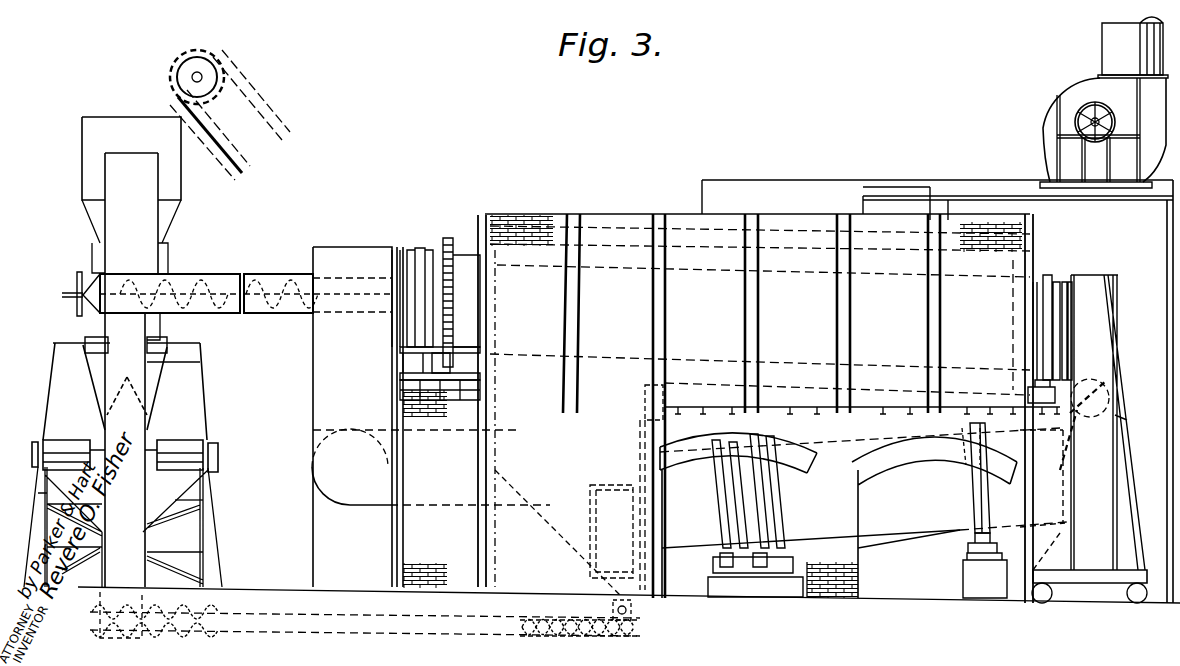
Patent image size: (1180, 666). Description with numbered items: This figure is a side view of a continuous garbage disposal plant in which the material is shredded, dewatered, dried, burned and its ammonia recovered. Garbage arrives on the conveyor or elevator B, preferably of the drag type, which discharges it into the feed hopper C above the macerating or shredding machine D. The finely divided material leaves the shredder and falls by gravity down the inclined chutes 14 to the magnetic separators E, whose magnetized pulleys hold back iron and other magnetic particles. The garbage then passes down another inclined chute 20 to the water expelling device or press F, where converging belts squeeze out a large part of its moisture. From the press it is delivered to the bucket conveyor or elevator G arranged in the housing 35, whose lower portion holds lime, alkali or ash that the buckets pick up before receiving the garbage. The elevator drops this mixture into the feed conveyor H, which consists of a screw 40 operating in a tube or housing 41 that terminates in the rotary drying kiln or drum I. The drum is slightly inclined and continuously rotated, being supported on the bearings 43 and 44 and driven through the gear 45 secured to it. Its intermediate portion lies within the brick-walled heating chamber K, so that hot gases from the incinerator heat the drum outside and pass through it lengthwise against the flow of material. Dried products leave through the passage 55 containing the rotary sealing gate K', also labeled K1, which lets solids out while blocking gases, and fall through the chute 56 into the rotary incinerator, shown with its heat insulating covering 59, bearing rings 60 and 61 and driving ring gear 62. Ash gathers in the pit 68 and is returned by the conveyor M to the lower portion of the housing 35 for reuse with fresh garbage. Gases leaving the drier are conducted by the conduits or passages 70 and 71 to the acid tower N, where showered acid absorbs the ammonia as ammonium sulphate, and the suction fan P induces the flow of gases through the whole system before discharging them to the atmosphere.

The conveyor or elevator B is at (218, 103).
The feed hopper C is at (181, 183).
The macerating or shredding machine D is at (159, 214).
The magnetic separators E is at (185, 420).
The conveyor or elevator G is at (132, 431).
The water expelling device or press F is at (145, 541).
The feed conveyor H is at (276, 275).
The rotary drying kiln or drum I is at (470, 250).
The heating chamber K is at (776, 408).
The rotary sealing gate K' is at (1105, 386).
The drum journal K1 is at (1105, 386).
The acid tower N is at (937, 391).
The suction fan P is at (1045, 125).
The conveyor M is at (548, 640).
The inclined chutes 14 is at (125, 391).
The inclined chute 20 is at (203, 500).
The housing 35 is at (200, 362).
The screw 40 is at (279, 318).
The tube or housing 41 is at (151, 294).
The bearing 43 is at (418, 248).
The bearing 44 is at (1052, 278).
The gear 45 is at (449, 245).
The passage 55 is at (1104, 328).
The chute 56 is at (1083, 440).
The heat insulating covering 59 is at (915, 545).
The bearing ring 60 is at (722, 508).
The bearing ring 61 is at (978, 503).
The ring gear 62 is at (768, 497).
The pit 68 is at (635, 602).
The conduit or passage 70 is at (396, 417).
The conduit or passage 71 is at (385, 515).